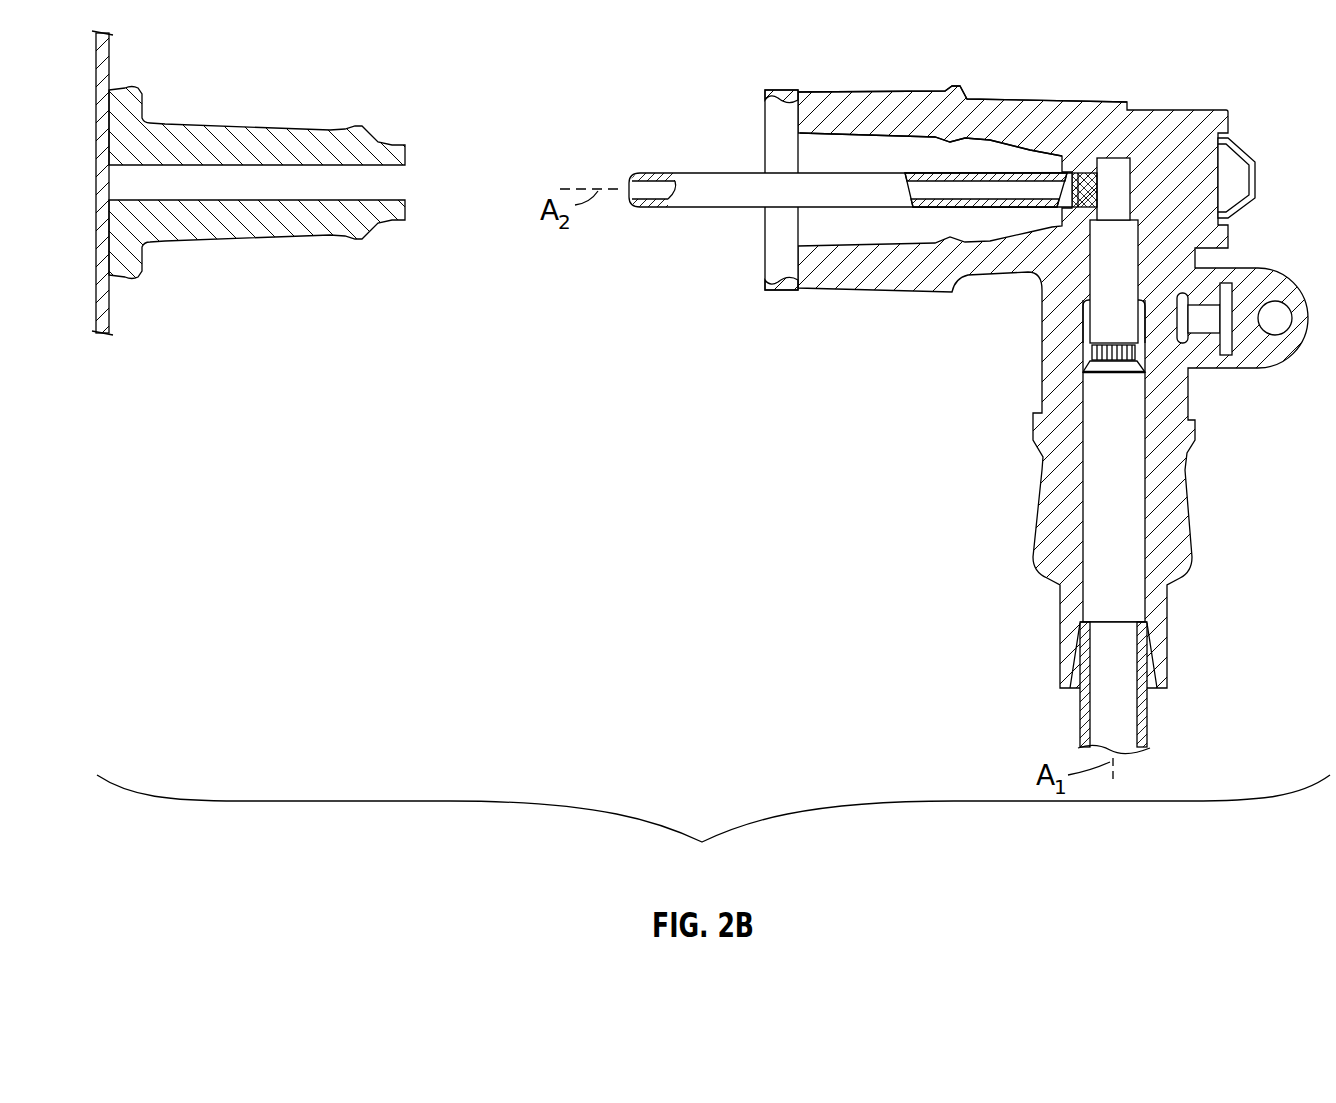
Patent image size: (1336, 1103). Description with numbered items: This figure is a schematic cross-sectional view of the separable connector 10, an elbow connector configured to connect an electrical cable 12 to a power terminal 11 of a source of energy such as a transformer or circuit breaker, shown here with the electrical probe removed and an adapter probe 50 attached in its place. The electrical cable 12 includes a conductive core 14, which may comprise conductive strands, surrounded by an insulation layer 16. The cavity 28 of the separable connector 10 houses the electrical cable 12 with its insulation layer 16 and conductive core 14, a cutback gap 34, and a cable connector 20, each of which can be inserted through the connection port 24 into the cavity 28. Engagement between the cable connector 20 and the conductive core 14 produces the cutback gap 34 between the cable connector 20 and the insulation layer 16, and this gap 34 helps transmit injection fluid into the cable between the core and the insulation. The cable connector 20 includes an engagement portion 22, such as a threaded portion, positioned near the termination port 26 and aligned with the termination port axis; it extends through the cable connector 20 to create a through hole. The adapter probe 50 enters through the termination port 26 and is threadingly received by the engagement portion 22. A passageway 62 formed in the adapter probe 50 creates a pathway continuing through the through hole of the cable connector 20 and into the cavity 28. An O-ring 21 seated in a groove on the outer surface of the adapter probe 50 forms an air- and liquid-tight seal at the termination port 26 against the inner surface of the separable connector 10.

The separable connector 10 is at (880, 338).
The power terminal 11 is at (286, 266).
The electrical cable 12 is at (1128, 688).
The conductive core 14 is at (1138, 353).
The insulation layer 16 is at (1085, 398).
The cable connector 20 is at (1097, 273).
The O-ring 21 is at (1073, 173).
The engagement portion 22 is at (1093, 172).
The connection port 24 is at (1075, 680).
The termination port 26 is at (798, 128).
The cavity 28 is at (871, 155).
The cutback gap 34 is at (1082, 328).
The adapter probe 50 is at (722, 200).
The passageway 62 is at (953, 190).